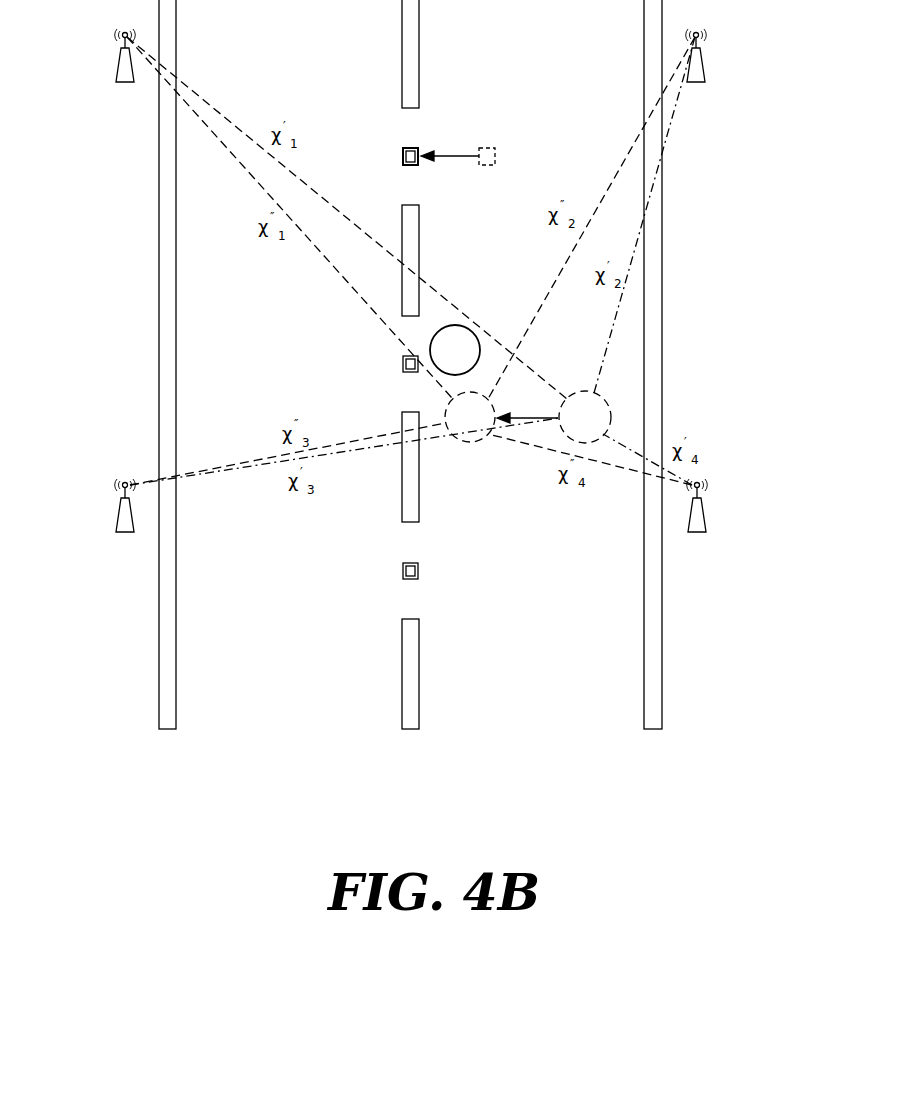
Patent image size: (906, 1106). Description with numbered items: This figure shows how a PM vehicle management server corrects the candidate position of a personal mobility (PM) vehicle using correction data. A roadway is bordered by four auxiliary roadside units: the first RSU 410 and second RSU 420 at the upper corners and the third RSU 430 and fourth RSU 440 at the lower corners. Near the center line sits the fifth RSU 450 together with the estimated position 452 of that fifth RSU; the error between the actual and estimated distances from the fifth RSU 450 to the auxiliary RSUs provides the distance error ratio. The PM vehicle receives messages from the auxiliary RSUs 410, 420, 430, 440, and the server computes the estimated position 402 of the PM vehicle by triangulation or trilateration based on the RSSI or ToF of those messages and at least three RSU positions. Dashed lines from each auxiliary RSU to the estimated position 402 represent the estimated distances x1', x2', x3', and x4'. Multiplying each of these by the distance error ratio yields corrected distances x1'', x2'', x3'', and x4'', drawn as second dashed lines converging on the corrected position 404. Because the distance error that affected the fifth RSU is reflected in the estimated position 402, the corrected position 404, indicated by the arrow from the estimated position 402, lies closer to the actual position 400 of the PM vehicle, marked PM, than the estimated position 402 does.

The actual position of PM vehicle 400 is at (450, 325).
The estimated position of PM vehicle 402 is at (583, 392).
The corrected position of PM vehicle 404 is at (475, 442).
The first RSU 410 is at (117, 72).
The second RSU 420 is at (705, 72).
The third RSU 430 is at (117, 522).
The fourth RSU 440 is at (705, 522).
The fifth RSU 450 is at (403, 155).
The estimated position of fifth RSU 452 is at (495, 160).